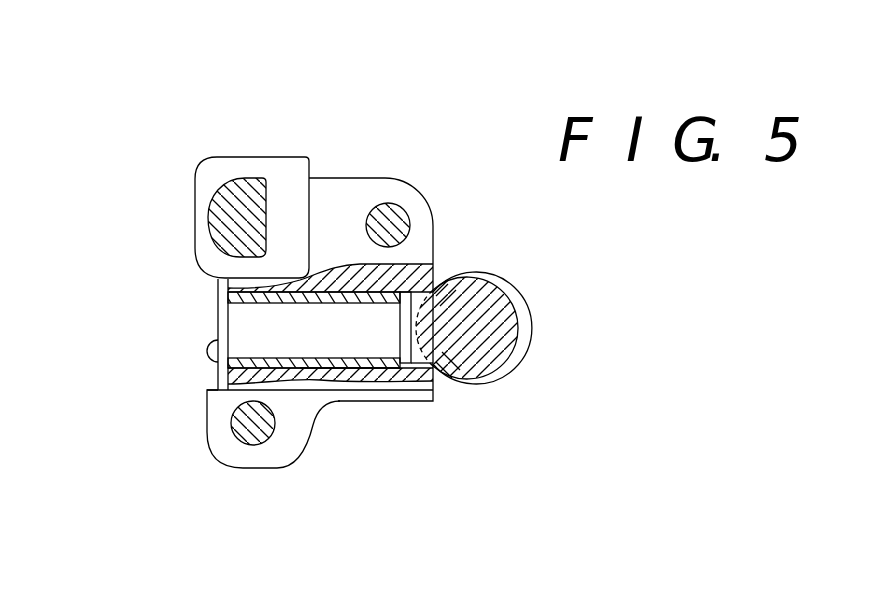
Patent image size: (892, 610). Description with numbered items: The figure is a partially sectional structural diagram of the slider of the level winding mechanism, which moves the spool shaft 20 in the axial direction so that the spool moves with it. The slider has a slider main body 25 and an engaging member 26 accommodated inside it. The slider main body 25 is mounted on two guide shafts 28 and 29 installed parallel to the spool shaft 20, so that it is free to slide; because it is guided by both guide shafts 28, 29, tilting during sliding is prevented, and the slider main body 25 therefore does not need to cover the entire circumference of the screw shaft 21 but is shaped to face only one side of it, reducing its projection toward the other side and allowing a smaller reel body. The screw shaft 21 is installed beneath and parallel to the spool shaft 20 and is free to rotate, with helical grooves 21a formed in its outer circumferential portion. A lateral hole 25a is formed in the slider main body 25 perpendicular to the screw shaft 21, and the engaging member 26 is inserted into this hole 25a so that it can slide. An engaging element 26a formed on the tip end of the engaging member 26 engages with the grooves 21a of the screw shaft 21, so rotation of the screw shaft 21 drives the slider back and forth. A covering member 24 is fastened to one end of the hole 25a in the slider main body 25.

The spool shaft 20 is at (248, 192).
The screw shaft 21 is at (486, 284).
The helical grooves 21a is at (526, 320).
The covering member 24 is at (217, 381).
The slider main body 25 is at (383, 192).
The lateral hole 25a is at (364, 356).
The engaging member 26 is at (363, 320).
The engaging element 26a is at (432, 338).
The guide shaft 28 is at (400, 218).
The guide shaft 29 is at (248, 428).